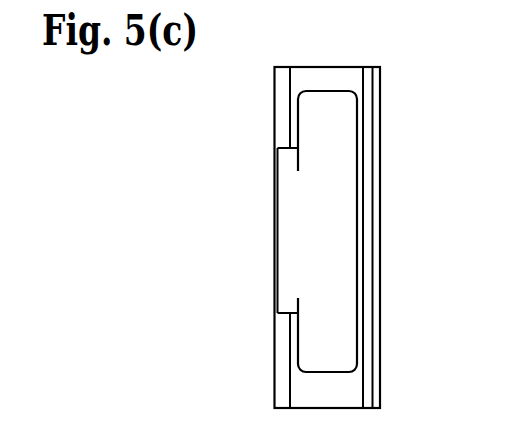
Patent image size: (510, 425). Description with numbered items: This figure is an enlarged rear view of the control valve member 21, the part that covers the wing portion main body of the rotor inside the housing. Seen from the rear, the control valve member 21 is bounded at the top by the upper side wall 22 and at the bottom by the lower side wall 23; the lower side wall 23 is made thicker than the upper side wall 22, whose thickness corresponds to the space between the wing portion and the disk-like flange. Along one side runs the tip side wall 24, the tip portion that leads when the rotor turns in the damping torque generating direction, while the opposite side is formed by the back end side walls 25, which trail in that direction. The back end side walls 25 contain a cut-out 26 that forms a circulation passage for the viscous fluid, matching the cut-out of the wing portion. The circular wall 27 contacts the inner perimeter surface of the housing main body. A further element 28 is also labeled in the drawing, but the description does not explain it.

The control valve member 21 is at (388, 313).
The upper side wall 22 is at (339, 78).
The lower side wall 23 is at (335, 391).
The tip side wall 24 is at (370, 130).
The back end side walls 25 is at (282, 111).
The cut-out 26 is at (288, 150).
The circular wall 27 is at (338, 211).
The rear wall 28 is at (377, 272).